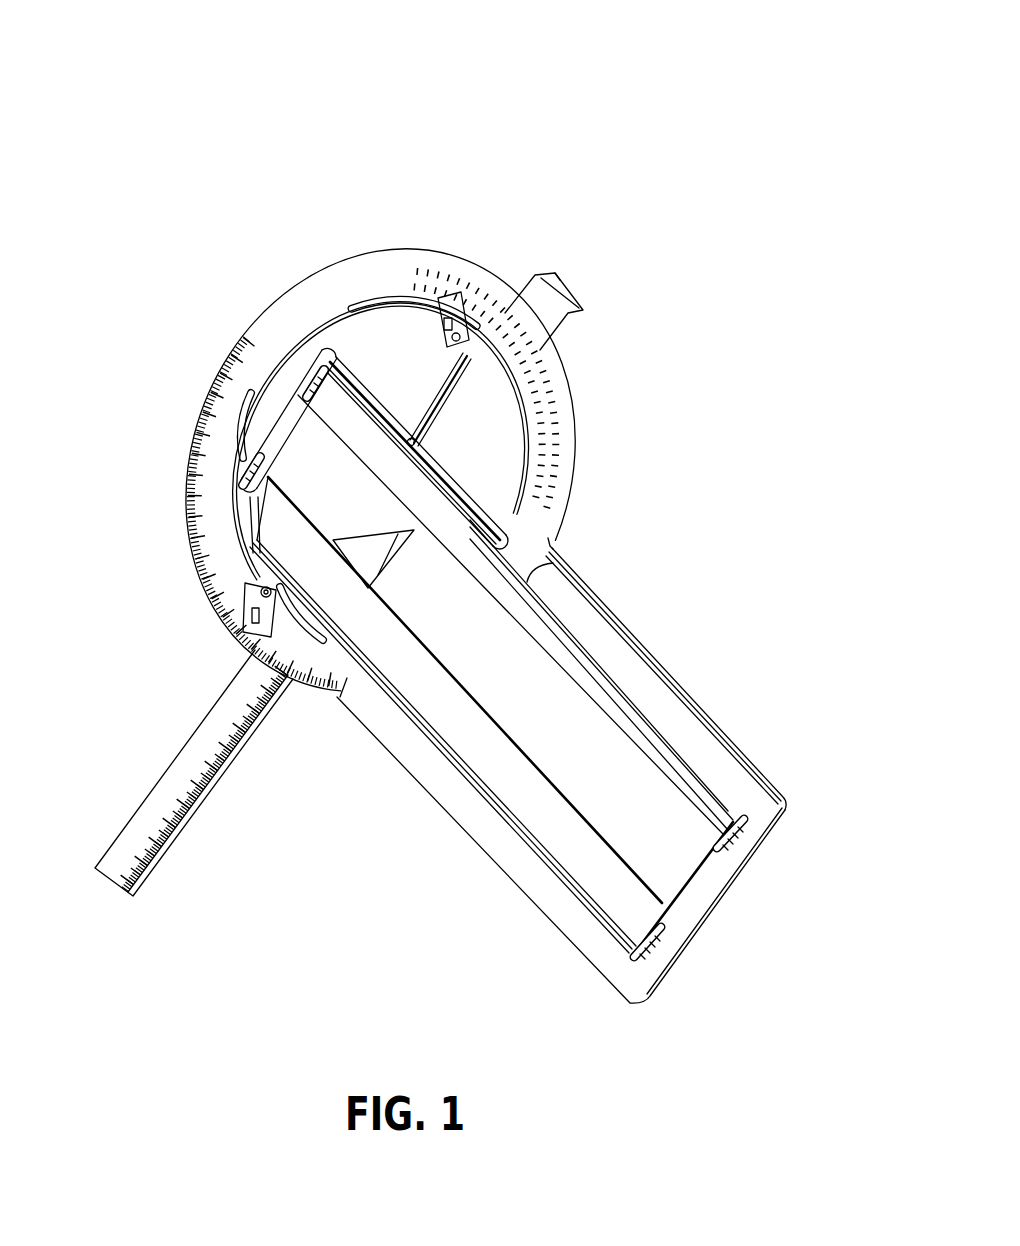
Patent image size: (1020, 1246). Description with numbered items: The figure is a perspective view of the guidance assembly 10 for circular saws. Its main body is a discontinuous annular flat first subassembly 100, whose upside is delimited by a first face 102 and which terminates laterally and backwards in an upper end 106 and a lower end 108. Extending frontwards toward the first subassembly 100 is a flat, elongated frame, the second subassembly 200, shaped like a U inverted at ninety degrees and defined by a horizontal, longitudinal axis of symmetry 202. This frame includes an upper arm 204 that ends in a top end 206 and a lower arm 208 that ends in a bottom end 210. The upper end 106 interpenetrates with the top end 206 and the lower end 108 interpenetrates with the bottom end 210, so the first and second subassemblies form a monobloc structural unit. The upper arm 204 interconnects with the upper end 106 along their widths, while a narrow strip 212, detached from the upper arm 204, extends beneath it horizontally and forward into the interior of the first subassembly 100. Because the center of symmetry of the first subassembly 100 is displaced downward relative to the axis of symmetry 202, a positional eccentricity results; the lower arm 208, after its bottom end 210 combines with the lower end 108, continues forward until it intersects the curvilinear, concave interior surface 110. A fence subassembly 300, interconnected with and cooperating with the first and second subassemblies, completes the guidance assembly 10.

The guidance assembly 10 is at (484, 198).
The first subassembly 100 is at (275, 263).
The first face 102 is at (312, 327).
The upper end 106 is at (525, 537).
The lower end 108 is at (303, 680).
The curvilinear, concave, interior surface 110 is at (507, 500).
The second subassembly 200 is at (660, 557).
The horizontal, longitudinal axis of symmetry 202 is at (555, 730).
The upper arm 204 is at (630, 633).
The top end 206 is at (562, 593).
The lower arm 208 is at (468, 835).
The bottom end 210 is at (393, 718).
The narrow strip 212 is at (508, 563).
The fence subassembly 300 is at (177, 708).